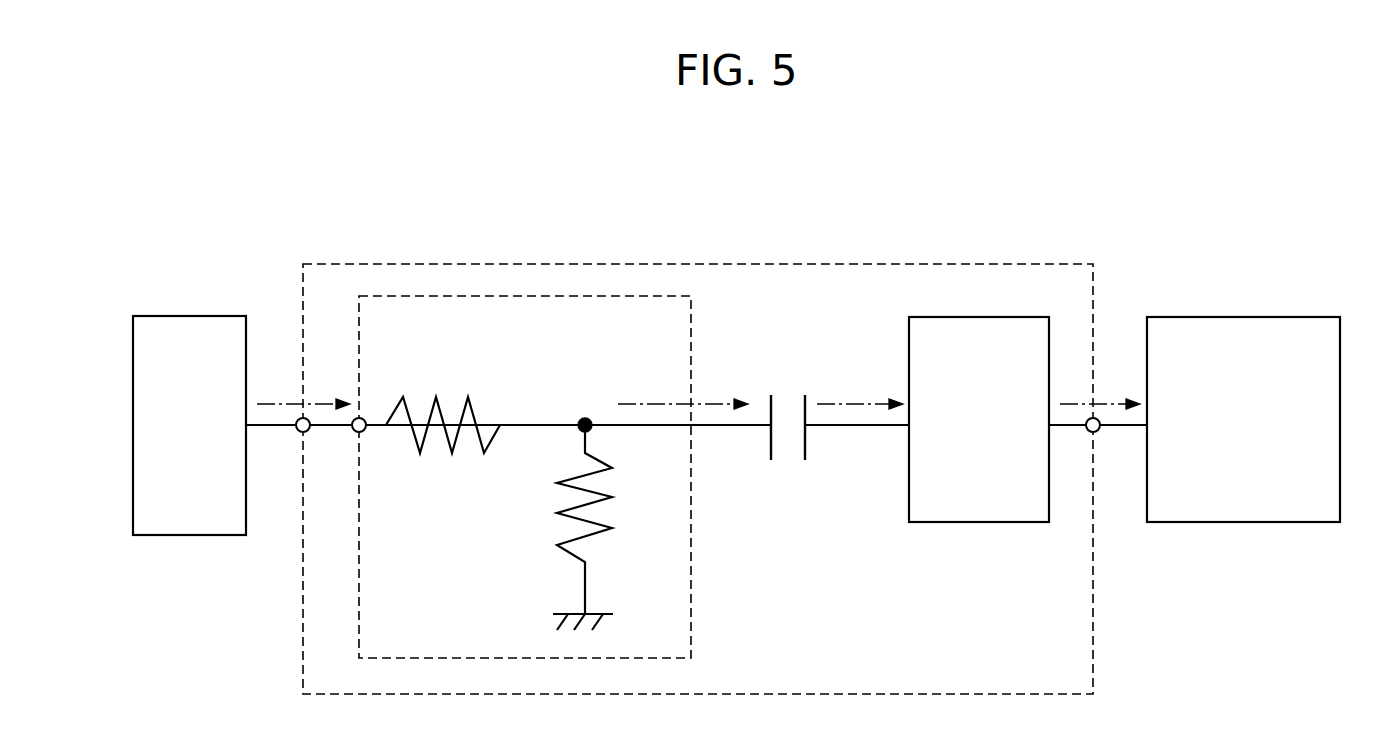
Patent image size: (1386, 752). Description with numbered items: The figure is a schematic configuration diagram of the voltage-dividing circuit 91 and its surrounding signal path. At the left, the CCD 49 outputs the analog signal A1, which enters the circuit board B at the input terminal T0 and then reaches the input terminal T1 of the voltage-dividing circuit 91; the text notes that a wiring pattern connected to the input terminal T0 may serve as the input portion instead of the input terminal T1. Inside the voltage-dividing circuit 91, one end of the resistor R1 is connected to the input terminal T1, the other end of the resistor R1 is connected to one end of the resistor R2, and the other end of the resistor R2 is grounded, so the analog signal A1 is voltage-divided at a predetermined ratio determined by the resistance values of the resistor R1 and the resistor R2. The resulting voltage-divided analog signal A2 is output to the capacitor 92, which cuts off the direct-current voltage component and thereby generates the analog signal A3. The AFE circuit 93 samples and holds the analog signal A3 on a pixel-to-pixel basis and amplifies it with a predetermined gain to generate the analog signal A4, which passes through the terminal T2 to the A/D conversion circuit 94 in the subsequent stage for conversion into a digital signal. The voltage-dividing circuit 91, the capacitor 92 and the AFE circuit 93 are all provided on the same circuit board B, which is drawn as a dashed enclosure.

The CCD 49 is at (205, 316).
The voltage-dividing circuit 91 is at (692, 325).
The resistor R1 is at (443, 408).
The resistor R2 is at (560, 524).
The capacitor 92 is at (786, 392).
The AFE circuit 93 is at (1010, 522).
The A/D conversion circuit 94 is at (1240, 317).
The circuit board B is at (990, 264).
The input terminal T0 is at (298, 431).
The input terminal T1 is at (365, 431).
The terminal T2 is at (1098, 431).
The analog signal A1 is at (318, 402).
The analog signal A2 is at (655, 402).
The analog signal A3 is at (850, 402).
The analog signal A4 is at (1110, 402).